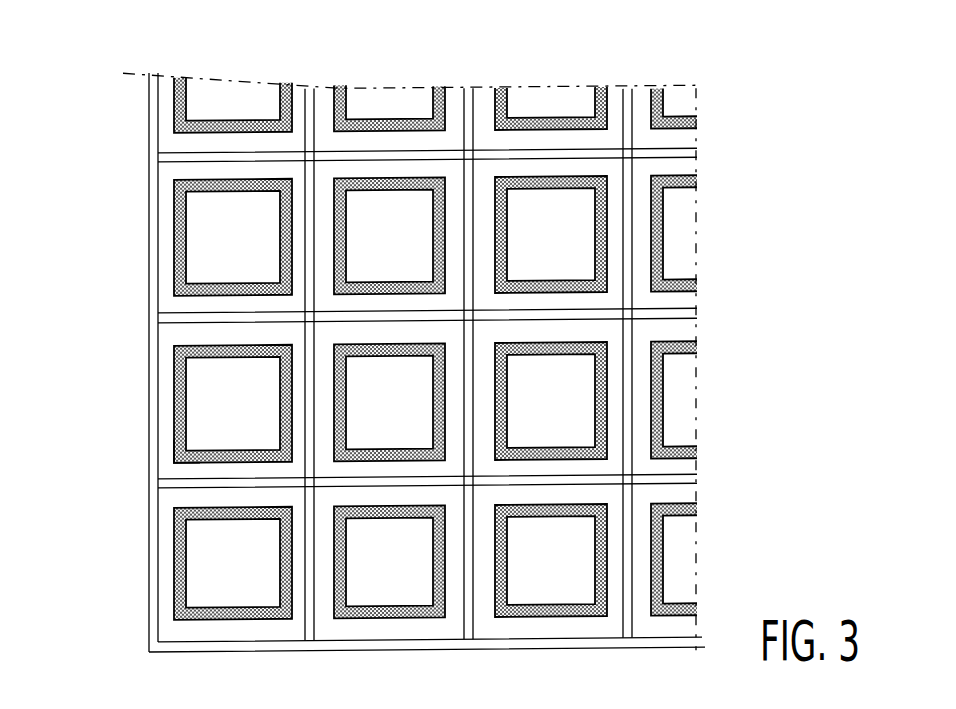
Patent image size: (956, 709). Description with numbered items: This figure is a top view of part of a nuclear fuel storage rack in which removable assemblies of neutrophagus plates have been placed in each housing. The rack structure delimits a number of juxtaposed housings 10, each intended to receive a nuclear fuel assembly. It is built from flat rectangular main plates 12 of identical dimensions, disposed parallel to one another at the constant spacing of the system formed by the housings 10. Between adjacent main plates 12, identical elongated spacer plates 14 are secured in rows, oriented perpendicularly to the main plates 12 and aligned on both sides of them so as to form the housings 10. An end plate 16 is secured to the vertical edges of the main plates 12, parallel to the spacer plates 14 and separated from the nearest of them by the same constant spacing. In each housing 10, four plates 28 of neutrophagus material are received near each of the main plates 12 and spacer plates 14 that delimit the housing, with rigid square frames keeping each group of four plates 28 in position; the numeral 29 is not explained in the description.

The housing 10 is at (243, 253).
The main plate 12 is at (310, 183).
The spacer plate 14 is at (185, 159).
The end plate 16 is at (187, 646).
The plate of neutrophagus material 28 is at (493, 107).
The street edge 29 is at (193, 499).